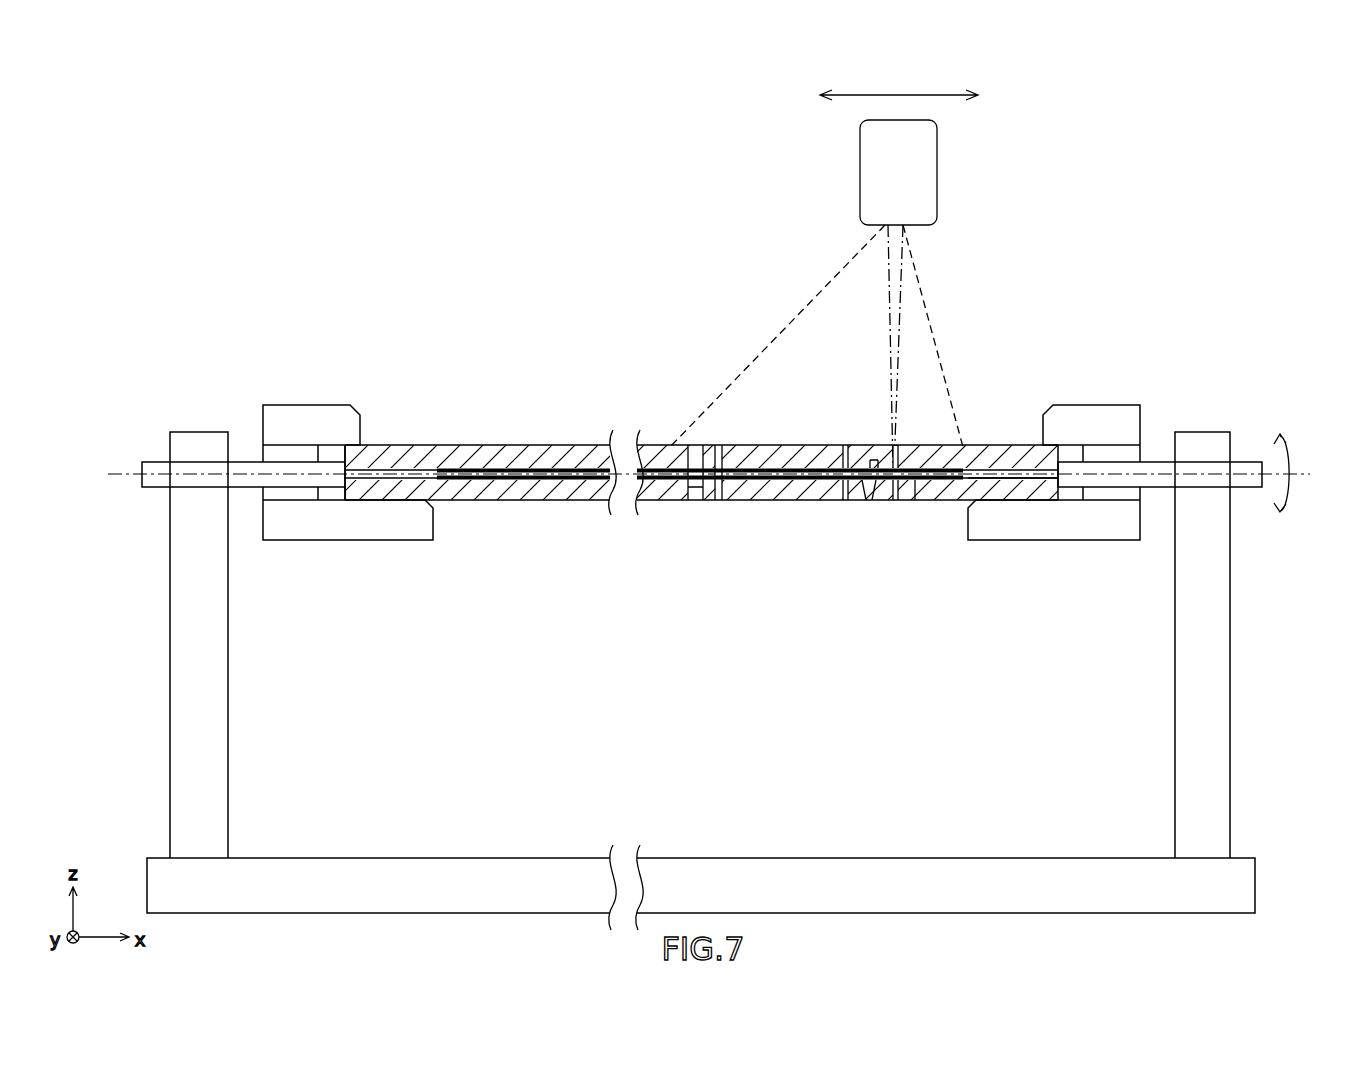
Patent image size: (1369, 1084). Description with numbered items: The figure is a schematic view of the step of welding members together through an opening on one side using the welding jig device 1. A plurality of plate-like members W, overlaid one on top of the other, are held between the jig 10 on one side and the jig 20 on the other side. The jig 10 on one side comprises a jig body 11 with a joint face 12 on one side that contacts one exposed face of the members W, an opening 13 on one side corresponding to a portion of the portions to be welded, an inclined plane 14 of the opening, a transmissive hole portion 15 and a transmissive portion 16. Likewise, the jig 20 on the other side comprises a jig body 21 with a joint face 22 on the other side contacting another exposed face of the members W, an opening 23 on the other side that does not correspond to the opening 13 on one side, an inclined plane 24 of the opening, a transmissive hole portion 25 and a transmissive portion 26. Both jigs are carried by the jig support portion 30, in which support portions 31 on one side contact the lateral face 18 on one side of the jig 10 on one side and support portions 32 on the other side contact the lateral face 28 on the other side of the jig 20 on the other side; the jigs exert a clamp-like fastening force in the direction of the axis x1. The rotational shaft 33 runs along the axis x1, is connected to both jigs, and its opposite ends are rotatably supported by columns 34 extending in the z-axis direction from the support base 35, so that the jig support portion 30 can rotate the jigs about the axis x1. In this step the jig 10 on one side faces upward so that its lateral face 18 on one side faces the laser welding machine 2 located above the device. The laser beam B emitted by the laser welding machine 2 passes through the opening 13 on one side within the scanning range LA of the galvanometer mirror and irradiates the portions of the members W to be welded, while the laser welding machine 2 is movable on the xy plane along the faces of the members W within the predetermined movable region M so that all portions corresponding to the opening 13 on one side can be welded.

The welding jig device 1 is at (1150, 270).
The laser welding machine 2 is at (937, 165).
The jig on one side 10 is at (697, 484).
The jig body 11 is at (993, 447).
The joint face on one side 12 is at (927, 447).
The opening on one side 13 is at (852, 447).
The inclined plane of the opening 14 is at (840, 447).
The transmissive hole portion 15 is at (737, 447).
The transmissive portion 16 is at (875, 447).
The lateral face on one side 18 is at (550, 445).
The jig on the other side 20 is at (1031, 514).
The jig body 21 is at (993, 500).
The joint face on the other side 22 is at (923, 487).
The opening on the other side 23 is at (882, 487).
The inclined plane of the opening 24 is at (870, 487).
The transmissive hole portion 25 is at (833, 487).
The transmissive portion 26 is at (692, 490).
The lateral face on the other side 28 is at (550, 500).
The jig support portion 30 is at (724, 605).
The support portions on one side 31 is at (305, 423).
The support portions on the other side 32 is at (304, 523).
The rotational shaft 33 is at (150, 460).
The columns 34 is at (195, 632).
The support base 35 is at (1256, 878).
The laser beam B is at (889, 320).
The scanning range LA is at (929, 320).
The movable region M is at (918, 95).
The members W is at (779, 498).
The axis x1 is at (1310, 473).